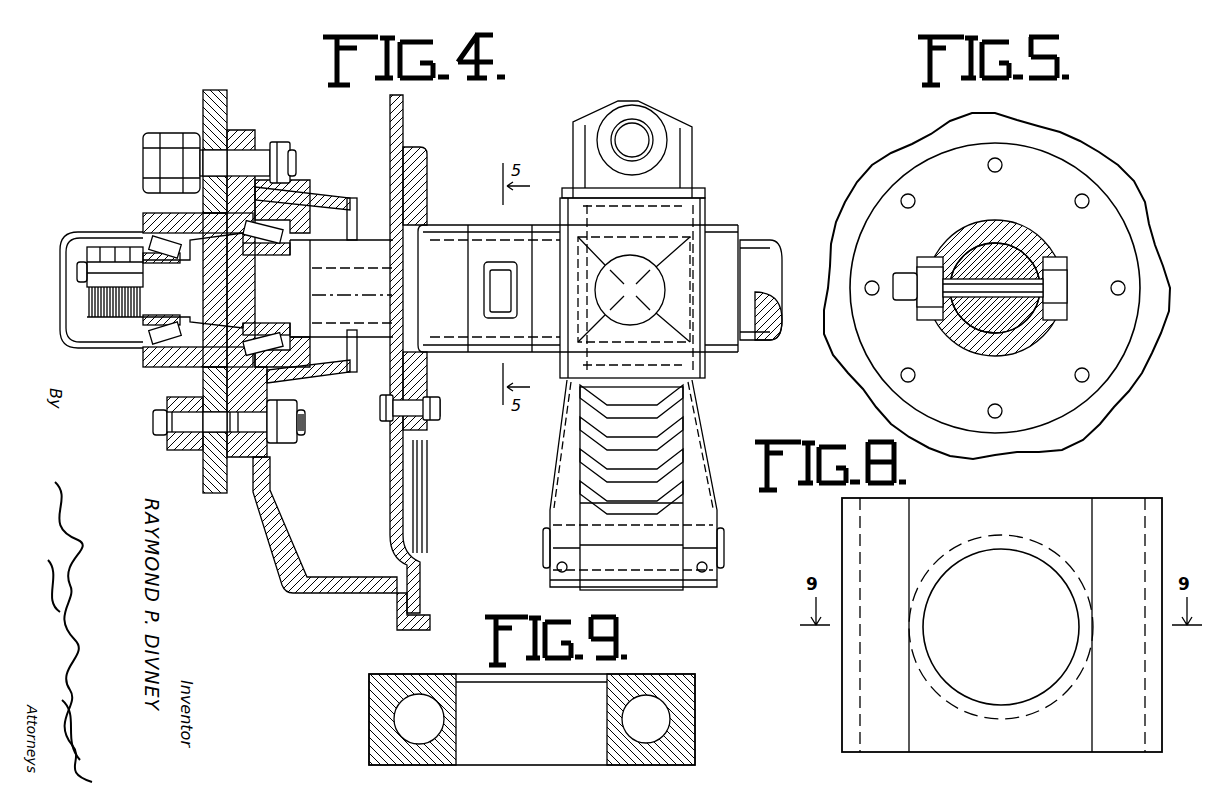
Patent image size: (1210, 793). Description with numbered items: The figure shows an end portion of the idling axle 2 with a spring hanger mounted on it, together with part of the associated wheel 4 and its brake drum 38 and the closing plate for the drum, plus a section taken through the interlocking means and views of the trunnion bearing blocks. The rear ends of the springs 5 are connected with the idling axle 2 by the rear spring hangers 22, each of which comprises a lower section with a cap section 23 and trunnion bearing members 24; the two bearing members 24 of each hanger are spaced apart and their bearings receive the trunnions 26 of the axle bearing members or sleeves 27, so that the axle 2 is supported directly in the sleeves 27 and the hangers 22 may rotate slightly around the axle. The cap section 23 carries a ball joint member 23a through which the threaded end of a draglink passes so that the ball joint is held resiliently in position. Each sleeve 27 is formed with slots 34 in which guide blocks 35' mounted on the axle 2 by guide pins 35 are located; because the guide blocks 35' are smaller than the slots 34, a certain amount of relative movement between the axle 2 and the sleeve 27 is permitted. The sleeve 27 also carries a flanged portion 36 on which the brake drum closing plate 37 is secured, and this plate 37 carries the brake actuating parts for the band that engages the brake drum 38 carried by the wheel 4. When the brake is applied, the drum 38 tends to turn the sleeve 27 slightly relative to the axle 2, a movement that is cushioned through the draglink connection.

In FIG. 4, the idling axle 2 is at (378, 343).
In FIG. 5, the idling axle 2 is at (1035, 327).
In FIG. 4, the wheels 4 is at (227, 113).
In FIG. 4, the springs 5 is at (672, 412).
In FIG. 4, the rear spring hangers 22 is at (713, 518).
In FIG. 4, the cap sections 23 is at (668, 172).
In FIG. 4, the ball joint member 23a is at (645, 115).
In FIG. 4, the trunnion bearing members 24 is at (700, 258).
In FIG. 8, the trunnion bearing members 24 is at (1127, 507).
In FIG. 9, the trunnion bearing members 24 is at (697, 718).
In FIG. 4, the trunnions 26 is at (660, 290).
In FIG. 4, the sleeves 27 is at (516, 225).
In FIG. 5, the sleeves 27 is at (1022, 232).
In FIG. 4, the slots 34 is at (497, 320).
In FIG. 5, the slots 34 is at (925, 313).
In FIG. 5, the guide pins 35 is at (993, 333).
In FIG. 5, the guide blocks 35' is at (1004, 268).
In FIG. 4, the flanged portion 36 is at (418, 197).
In FIG. 5, the flanged portion 36 is at (1108, 220).
In FIG. 4, the brake drum closing plate 37 is at (403, 128).
In FIG. 5, the brake drum closing plate 37 is at (1165, 297).
In FIG. 4, the brake drum 38 is at (333, 576).